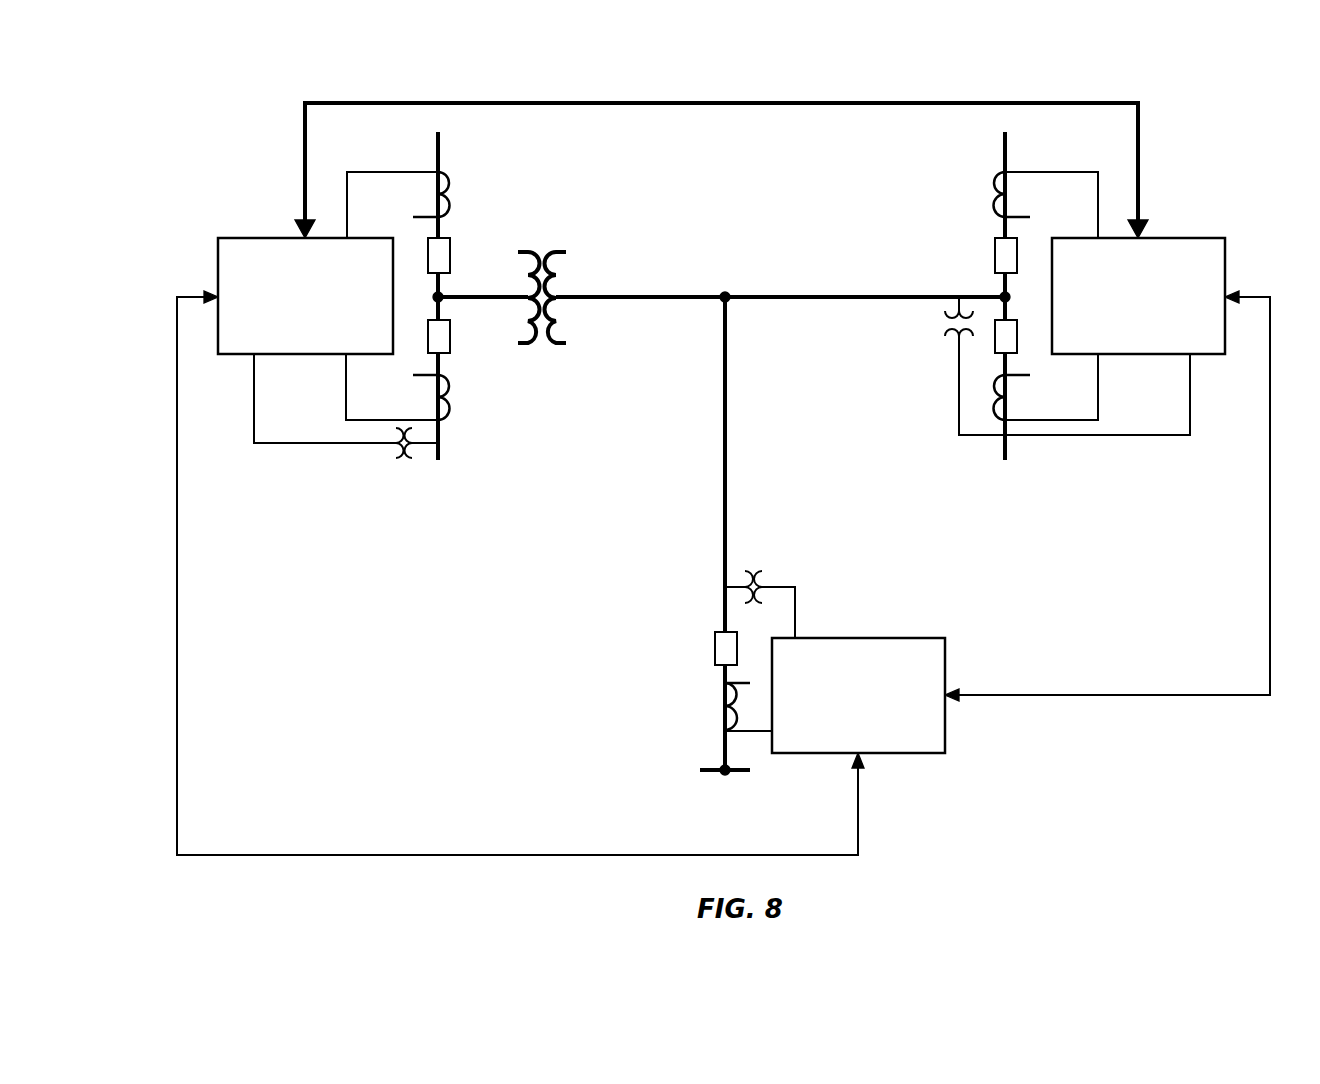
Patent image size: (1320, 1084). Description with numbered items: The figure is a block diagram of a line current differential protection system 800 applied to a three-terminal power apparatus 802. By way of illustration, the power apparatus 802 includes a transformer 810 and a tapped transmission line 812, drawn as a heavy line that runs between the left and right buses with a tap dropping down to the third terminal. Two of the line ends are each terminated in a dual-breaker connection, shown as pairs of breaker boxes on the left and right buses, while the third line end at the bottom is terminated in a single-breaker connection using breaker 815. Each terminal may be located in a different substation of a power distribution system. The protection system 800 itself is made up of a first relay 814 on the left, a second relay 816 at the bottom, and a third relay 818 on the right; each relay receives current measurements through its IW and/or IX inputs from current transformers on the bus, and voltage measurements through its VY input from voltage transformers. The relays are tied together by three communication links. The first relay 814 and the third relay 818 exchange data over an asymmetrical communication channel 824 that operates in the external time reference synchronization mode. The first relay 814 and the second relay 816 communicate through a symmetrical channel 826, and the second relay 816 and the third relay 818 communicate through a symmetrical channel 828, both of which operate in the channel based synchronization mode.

The line current differential protection system 800 is at (196, 148).
The three-terminal power apparatus 802 is at (682, 198).
The transformer 810 is at (549, 238).
The tapped transmission line 812 is at (645, 292).
The first relay 814 is at (268, 238).
The breaker 815 is at (713, 652).
The second relay 816 is at (945, 648).
The third relay 818 is at (1212, 238).
The asymmetrical communication channel 824 is at (712, 103).
The symmetrical channel 826 is at (533, 853).
The symmetrical channel 828 is at (1270, 466).